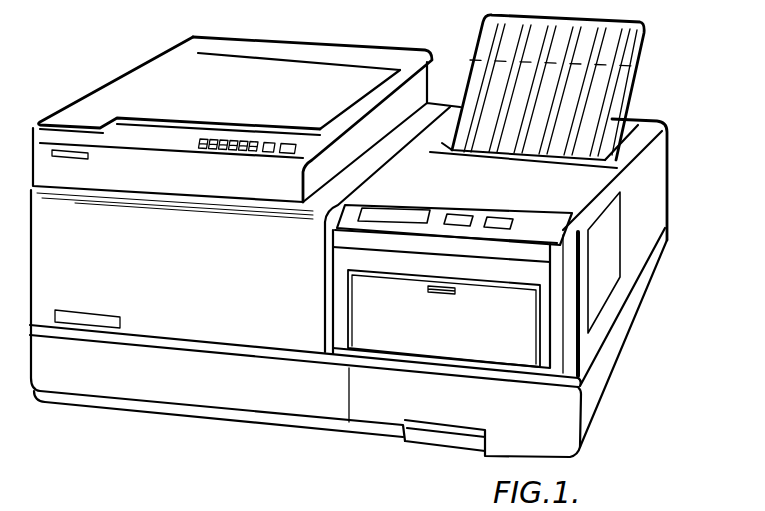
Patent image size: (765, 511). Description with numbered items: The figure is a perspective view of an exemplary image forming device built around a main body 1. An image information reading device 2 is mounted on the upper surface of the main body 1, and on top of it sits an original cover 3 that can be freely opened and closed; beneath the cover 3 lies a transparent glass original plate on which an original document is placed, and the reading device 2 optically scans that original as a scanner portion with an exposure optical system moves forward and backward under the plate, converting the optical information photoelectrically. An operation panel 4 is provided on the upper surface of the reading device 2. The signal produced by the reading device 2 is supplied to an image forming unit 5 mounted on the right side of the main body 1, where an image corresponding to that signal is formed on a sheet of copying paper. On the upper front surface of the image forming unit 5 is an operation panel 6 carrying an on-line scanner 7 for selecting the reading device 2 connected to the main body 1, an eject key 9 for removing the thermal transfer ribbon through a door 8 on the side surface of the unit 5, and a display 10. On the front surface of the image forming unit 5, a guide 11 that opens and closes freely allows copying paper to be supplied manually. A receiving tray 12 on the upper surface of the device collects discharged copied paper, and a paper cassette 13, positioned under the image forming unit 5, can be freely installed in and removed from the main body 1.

The main body 1 is at (209, 387).
The image information reading device 2 is at (341, 40).
The original cover 3 is at (160, 72).
The operation panel 4 is at (174, 145).
The image forming unit 5 is at (668, 167).
The operation panel 6 is at (453, 187).
The on-line scanner 7 is at (497, 223).
The door 8 is at (605, 282).
The eject key 9 is at (465, 219).
The display 10 is at (407, 209).
The guide 11 is at (362, 322).
The receiving tray 12 is at (563, 18).
The paper cassette 13 is at (393, 404).